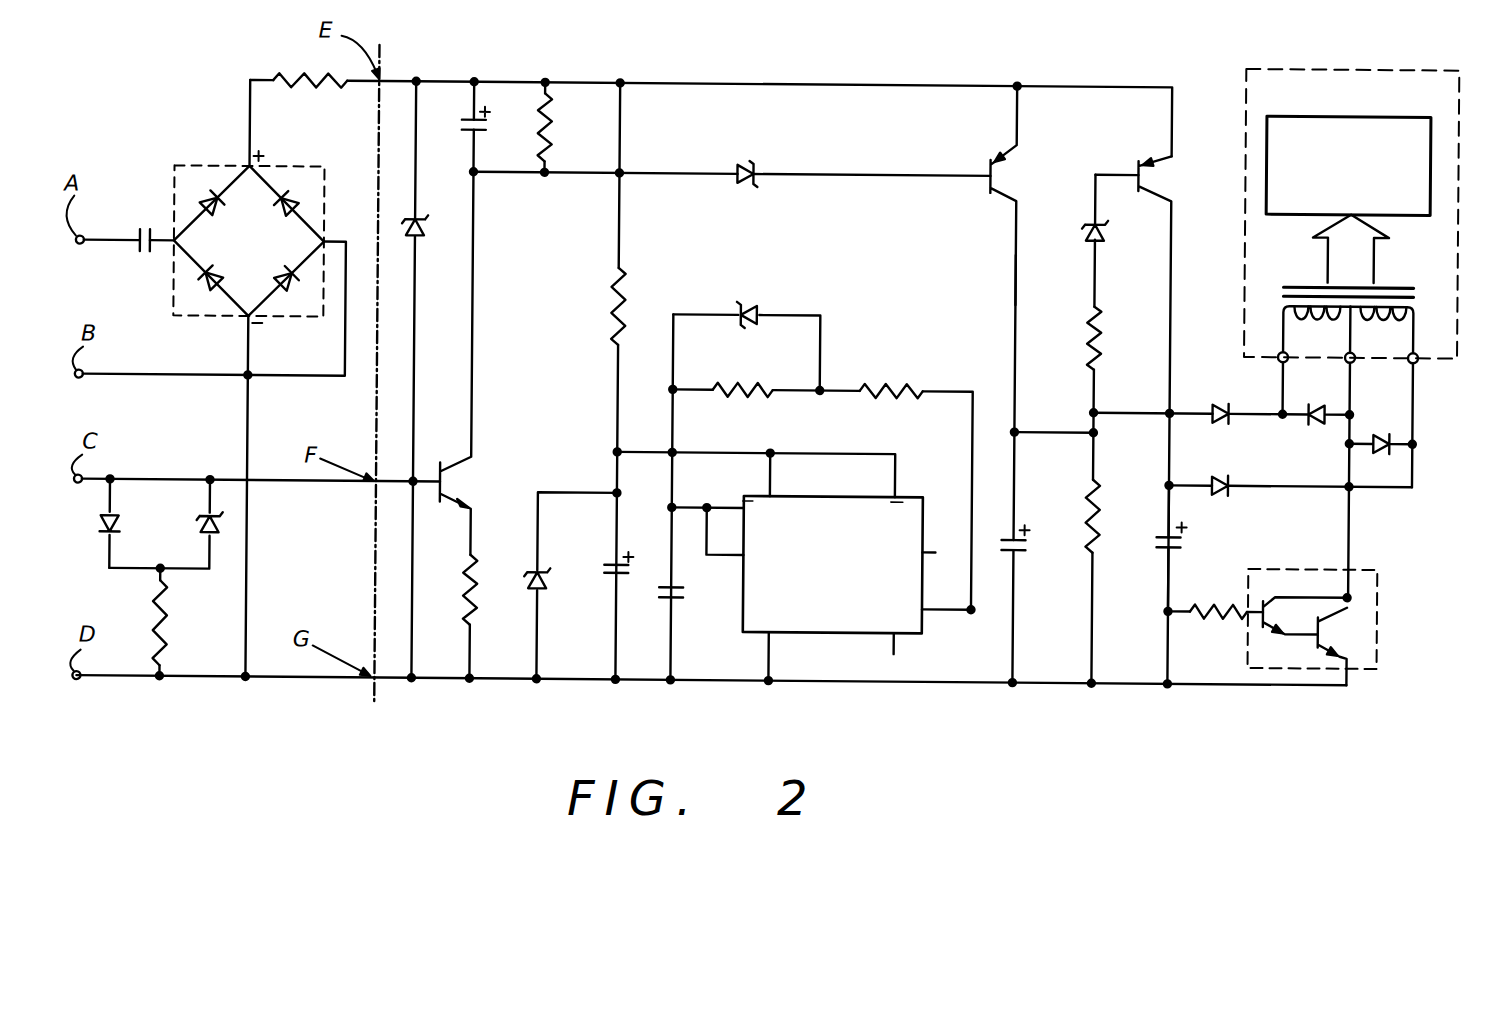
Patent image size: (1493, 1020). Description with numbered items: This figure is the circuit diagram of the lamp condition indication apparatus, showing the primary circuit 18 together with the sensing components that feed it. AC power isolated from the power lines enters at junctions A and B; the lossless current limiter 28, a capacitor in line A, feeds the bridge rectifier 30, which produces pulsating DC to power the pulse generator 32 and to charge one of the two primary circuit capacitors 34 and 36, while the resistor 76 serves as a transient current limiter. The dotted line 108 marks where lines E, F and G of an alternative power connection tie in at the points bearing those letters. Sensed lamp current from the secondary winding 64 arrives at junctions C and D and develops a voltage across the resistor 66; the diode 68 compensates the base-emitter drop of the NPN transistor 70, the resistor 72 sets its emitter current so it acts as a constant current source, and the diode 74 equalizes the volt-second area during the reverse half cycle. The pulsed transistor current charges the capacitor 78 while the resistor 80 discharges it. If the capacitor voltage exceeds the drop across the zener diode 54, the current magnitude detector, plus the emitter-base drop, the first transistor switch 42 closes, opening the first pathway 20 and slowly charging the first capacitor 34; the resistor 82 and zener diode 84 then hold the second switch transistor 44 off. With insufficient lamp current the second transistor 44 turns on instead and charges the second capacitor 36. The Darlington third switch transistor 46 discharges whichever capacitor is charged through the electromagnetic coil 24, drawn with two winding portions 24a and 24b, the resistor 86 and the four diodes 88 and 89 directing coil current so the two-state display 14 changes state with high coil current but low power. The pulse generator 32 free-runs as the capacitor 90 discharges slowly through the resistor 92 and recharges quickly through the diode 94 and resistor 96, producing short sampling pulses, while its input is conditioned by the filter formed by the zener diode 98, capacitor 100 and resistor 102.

The two-state display 14 is at (1330, 109).
The primary circuit 18 is at (720, 82).
The first current flow pathway 20 is at (1014, 272).
The electromagnetic coil 24 is at (284, 484).
The coil winding 24a is at (1317, 315).
The coil winding 24b is at (1393, 315).
The lossless current limiter 28 is at (145, 228).
The rectifier 30 is at (195, 165).
The pulse generator 32 is at (793, 565).
The first primary circuit capacitor 34 is at (1048, 556).
The second primary circuit capacitor 36 is at (1180, 538).
The first transistor switch 42 is at (997, 165).
The second switch transistor 44 is at (1150, 170).
The third switch transistor 46 is at (1378, 571).
The zener diode 54 is at (742, 160).
The secondary winding 64 is at (1222, 614).
The resistor 66 is at (176, 616).
The diode 68 is at (122, 524).
The NPN transistor 70 is at (453, 482).
The resistor 72 is at (476, 594).
The diode 74 is at (200, 530).
The resistor 76 is at (292, 72).
The capacitor 78 is at (463, 128).
The resistor 80 is at (550, 142).
The resistor 82 is at (1100, 319).
The zener diode 84 is at (1108, 224).
The resistor 86 is at (1100, 494).
The diodes 88 is at (1218, 463).
The diodes 89 is at (1318, 423).
The capacitor 90 is at (680, 593).
The resistor 92 is at (745, 391).
The diode 94 is at (750, 297).
The resistor 96 is at (900, 379).
The zener diode 98 is at (546, 586).
The capacitor 100 is at (603, 566).
The resistor 102 is at (606, 285).
The dotted line 108 is at (382, 62).